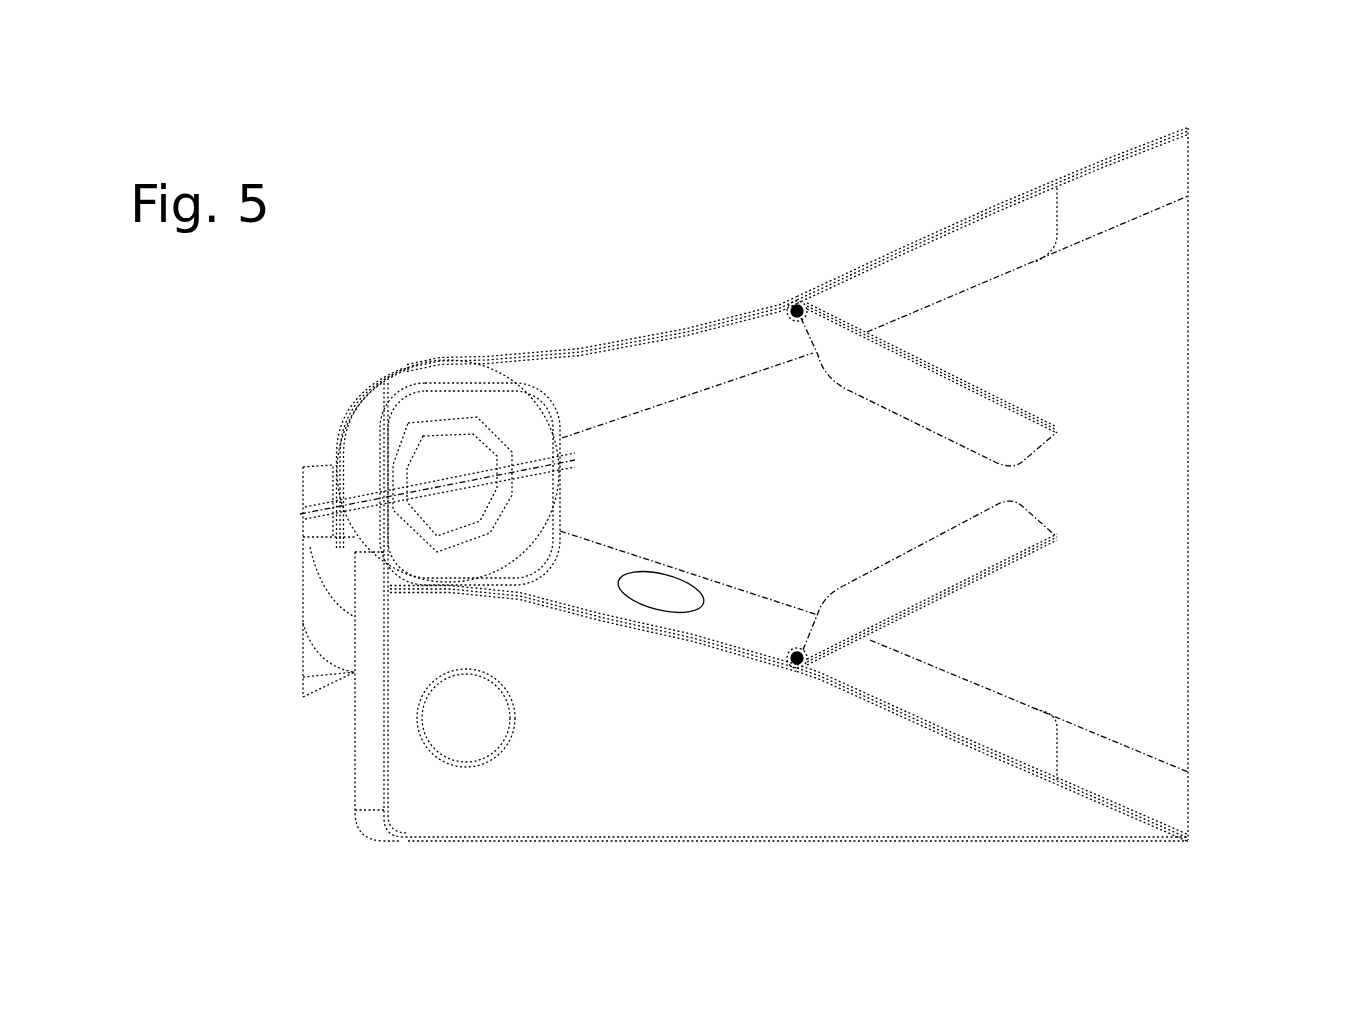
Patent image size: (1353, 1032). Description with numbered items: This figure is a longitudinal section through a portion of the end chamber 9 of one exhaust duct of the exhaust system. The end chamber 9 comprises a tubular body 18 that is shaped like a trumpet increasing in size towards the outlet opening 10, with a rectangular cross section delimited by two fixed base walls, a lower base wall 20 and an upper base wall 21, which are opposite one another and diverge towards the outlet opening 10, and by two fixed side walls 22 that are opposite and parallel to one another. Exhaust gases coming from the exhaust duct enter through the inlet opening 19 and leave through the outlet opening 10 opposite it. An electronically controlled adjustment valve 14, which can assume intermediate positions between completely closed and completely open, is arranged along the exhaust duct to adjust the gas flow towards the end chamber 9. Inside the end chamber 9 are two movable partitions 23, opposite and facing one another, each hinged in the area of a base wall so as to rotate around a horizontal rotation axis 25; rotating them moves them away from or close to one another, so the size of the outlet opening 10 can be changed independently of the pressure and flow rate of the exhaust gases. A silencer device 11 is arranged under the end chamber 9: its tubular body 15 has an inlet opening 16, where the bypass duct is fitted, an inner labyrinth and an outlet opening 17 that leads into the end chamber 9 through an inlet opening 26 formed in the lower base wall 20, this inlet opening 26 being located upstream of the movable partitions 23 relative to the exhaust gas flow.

The end chamber 9 is at (368, 103).
The outlet opening 10 is at (1217, 487).
The silencer device 11 is at (310, 789).
The adjustment valve 14 is at (440, 481).
The tubular body 15 is at (638, 795).
The inlet opening 16 is at (469, 782).
The outlet opening 17 is at (666, 657).
The tubular body 18 is at (850, 148).
The inlet opening 19 is at (456, 393).
The lower base wall 20 is at (928, 697).
The upper base wall 21 is at (688, 357).
The side walls 22 is at (1122, 279).
The movable partitions 23 is at (985, 424).
The rotation axis 25 is at (793, 303).
The inlet opening 26 is at (661, 564).